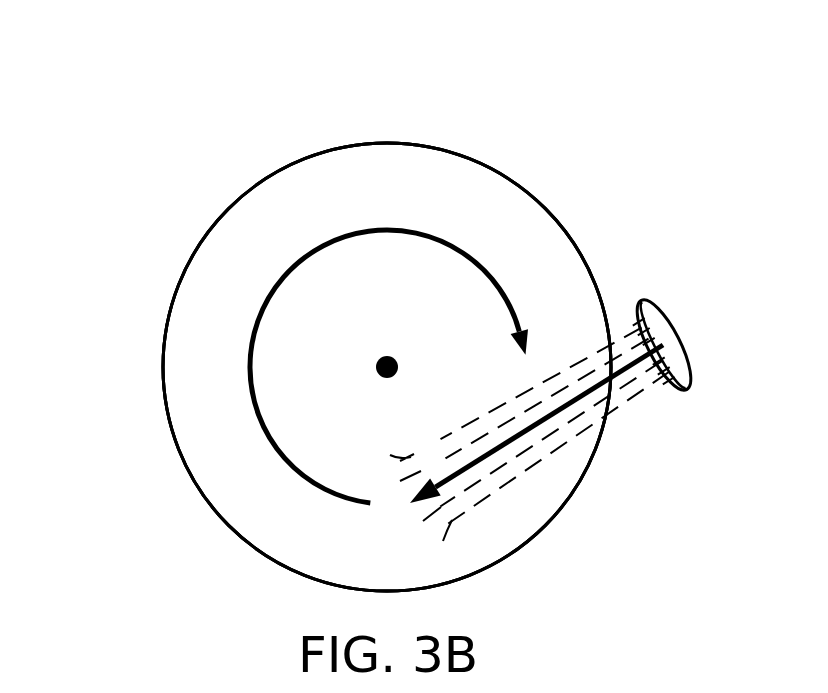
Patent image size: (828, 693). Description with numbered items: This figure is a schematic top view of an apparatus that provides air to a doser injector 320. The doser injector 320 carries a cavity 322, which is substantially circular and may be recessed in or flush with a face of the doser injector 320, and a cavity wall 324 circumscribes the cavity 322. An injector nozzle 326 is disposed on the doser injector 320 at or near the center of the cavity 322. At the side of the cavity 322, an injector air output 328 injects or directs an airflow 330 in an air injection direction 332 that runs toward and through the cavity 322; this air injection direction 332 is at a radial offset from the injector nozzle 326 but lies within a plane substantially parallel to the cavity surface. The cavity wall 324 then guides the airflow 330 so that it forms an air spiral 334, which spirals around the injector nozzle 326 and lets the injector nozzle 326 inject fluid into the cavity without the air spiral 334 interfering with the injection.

The doser injector 320 is at (88, 108).
The cavity 322 is at (222, 268).
The cavity wall 324 is at (188, 478).
The injector nozzle 326 is at (377, 361).
The injector air output 328 is at (643, 308).
The airflow 330 is at (540, 390).
The air injection direction 332 is at (478, 455).
The air spiral 334 is at (508, 300).